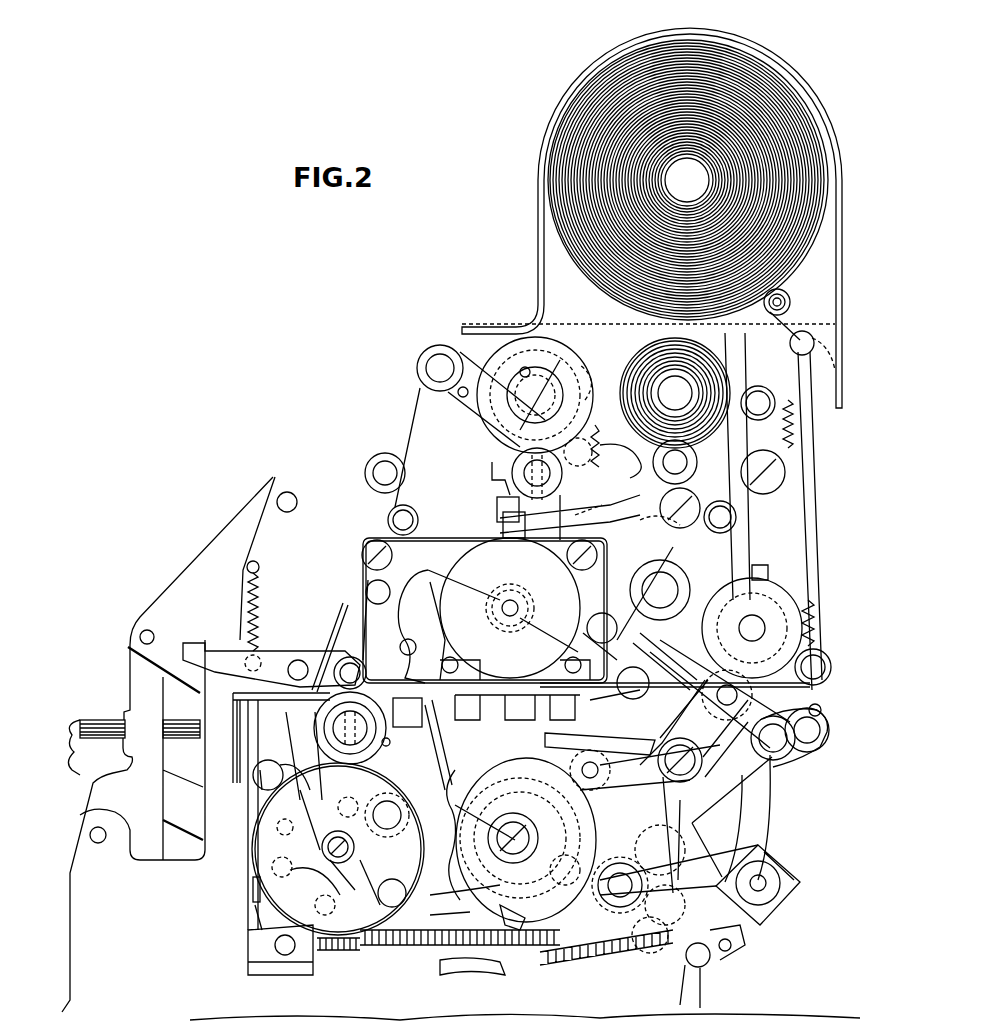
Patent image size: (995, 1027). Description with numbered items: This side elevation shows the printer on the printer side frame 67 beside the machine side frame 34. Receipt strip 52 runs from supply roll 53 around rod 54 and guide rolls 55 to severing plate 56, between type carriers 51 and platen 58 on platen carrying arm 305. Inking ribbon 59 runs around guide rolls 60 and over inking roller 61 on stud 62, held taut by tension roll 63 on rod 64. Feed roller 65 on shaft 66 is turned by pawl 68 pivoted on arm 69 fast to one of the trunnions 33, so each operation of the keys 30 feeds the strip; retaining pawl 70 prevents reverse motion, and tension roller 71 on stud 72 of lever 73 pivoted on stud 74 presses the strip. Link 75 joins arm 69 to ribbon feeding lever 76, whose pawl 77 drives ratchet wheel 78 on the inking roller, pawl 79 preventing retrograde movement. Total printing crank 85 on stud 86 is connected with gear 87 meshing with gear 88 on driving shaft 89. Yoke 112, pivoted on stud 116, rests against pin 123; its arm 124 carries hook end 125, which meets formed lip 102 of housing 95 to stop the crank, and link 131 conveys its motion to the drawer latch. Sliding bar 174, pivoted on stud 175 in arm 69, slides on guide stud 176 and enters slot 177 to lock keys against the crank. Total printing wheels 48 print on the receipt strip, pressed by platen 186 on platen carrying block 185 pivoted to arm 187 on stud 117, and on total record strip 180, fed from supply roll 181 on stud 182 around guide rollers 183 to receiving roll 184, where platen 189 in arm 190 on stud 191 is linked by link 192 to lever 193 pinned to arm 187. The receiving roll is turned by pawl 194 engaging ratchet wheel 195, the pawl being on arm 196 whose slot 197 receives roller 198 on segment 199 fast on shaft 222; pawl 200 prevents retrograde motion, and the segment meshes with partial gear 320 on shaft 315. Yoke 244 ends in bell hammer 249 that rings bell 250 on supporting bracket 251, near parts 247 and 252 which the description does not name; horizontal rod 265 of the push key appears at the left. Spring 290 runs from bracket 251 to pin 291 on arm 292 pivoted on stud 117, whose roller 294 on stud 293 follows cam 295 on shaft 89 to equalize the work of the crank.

The shaft 30 is at (76, 722).
The pin 33 is at (400, 810).
The frame plate 34 is at (182, 578).
The cam disc 48 is at (535, 642).
The pawl 51 is at (440, 633).
The link arm 52 is at (812, 470).
The paper roll 53 is at (602, 278).
The pin 54 is at (789, 300).
The spring 55 is at (798, 341).
The lever hole 56 is at (305, 660).
The block 58 is at (405, 712).
The stud 59 is at (662, 684).
The plate 60 is at (366, 548).
The frame bar 61 is at (742, 575).
The wheel 62 is at (740, 627).
The link 63 is at (680, 585).
The pivot 64 is at (612, 627).
The pin 65 is at (389, 746).
The pulley 66 is at (340, 728).
The frame edge 67 is at (252, 546).
The arm 68 is at (297, 749).
The lever 69 is at (370, 885).
The rod 70 is at (255, 796).
The pivot ring 71 is at (350, 657).
The rod 72 is at (365, 610).
The spring 73 is at (262, 655).
The bar 74 is at (315, 660).
The arm 75 is at (750, 778).
The link 76 is at (762, 735).
The stop 77 is at (762, 565).
The rod 78 is at (722, 646).
The pin 79 is at (821, 712).
The hub 85 is at (505, 815).
The arm 86 is at (470, 808).
The gear wheel 87 is at (540, 816).
The pivot 88 is at (660, 778).
The roller 89 is at (610, 905).
The bracket 95 is at (470, 768).
The pawl 102 is at (505, 918).
The block 112 is at (787, 868).
The pivot 116 is at (766, 890).
The screw 117 is at (685, 757).
The pin 123 is at (730, 950).
The rack 124 is at (560, 968).
The pad 125 is at (465, 975).
The arm 131 is at (700, 995).
The lever 174 is at (455, 915).
The pin 175 is at (388, 880).
The link 176 is at (462, 892).
The gear 177 is at (566, 878).
The lever 180 is at (410, 420).
The cover plate 181 is at (650, 355).
The tape roll 182 is at (668, 390).
The pivot pin 183 is at (430, 358).
The roller 184 is at (540, 372).
The bar 185 is at (600, 740).
The comb 186 is at (515, 720).
The link 187 is at (645, 750).
The block 189 is at (500, 530).
The bar 190 is at (578, 506).
The gear 191 is at (670, 530).
The link 192 is at (708, 672).
The link 193 is at (712, 776).
The arc 194 is at (567, 372).
The pin 195 is at (523, 370).
The spring 196 is at (596, 422).
The arm 197 is at (632, 458).
The roller 198 is at (653, 462).
The gear 199 is at (575, 440).
The arm 200 is at (462, 398).
The pawl 222 is at (598, 512).
The bracket 244 is at (248, 948).
The screw 247 is at (285, 955).
The rack 249 is at (350, 965).
The wheel 250 is at (256, 851).
The rod 251 is at (262, 906).
The clip 252 is at (252, 889).
The shaft 265 is at (88, 720).
The rack 290 is at (406, 955).
The roller 291 is at (690, 962).
The arm 292 is at (698, 860).
The gear 293 is at (655, 935).
The gear 294 is at (655, 912).
The gear 295 is at (662, 845).
The arm 305 is at (440, 762).
The roller 315 is at (525, 470).
The pawl 320 is at (490, 478).